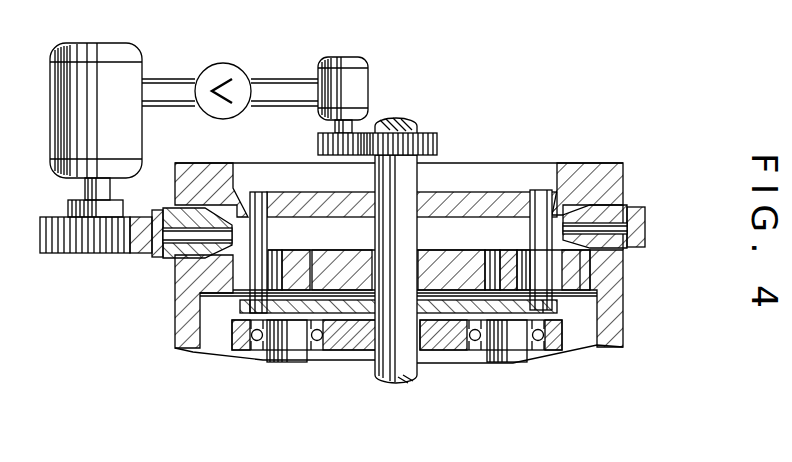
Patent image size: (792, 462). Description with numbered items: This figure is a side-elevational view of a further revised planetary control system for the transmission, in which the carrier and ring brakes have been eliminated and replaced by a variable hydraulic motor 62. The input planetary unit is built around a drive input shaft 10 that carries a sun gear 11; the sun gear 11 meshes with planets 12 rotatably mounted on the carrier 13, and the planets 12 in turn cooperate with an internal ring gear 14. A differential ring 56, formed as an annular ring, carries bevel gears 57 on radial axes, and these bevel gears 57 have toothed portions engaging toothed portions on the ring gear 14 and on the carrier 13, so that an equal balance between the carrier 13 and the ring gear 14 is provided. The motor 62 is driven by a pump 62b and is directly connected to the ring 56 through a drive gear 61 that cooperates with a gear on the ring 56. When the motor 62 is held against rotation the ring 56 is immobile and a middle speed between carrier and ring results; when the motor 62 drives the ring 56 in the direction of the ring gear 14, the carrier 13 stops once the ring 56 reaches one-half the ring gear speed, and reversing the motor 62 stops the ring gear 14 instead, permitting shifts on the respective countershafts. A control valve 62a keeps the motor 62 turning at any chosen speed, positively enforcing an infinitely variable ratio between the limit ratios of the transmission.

The drive input shaft 10 is at (392, 241).
The sun gear 11 is at (443, 268).
The planets 12 is at (512, 263).
The carrier 13 is at (197, 178).
The internal ring gear 14 is at (183, 313).
The differential ring 56 is at (152, 253).
The bevel gears 57 is at (617, 212).
The drive gear 61 is at (40, 237).
The variable hydraulic motor 62 is at (100, 138).
The control valve 62a is at (217, 63).
The pump 62b is at (383, 96).